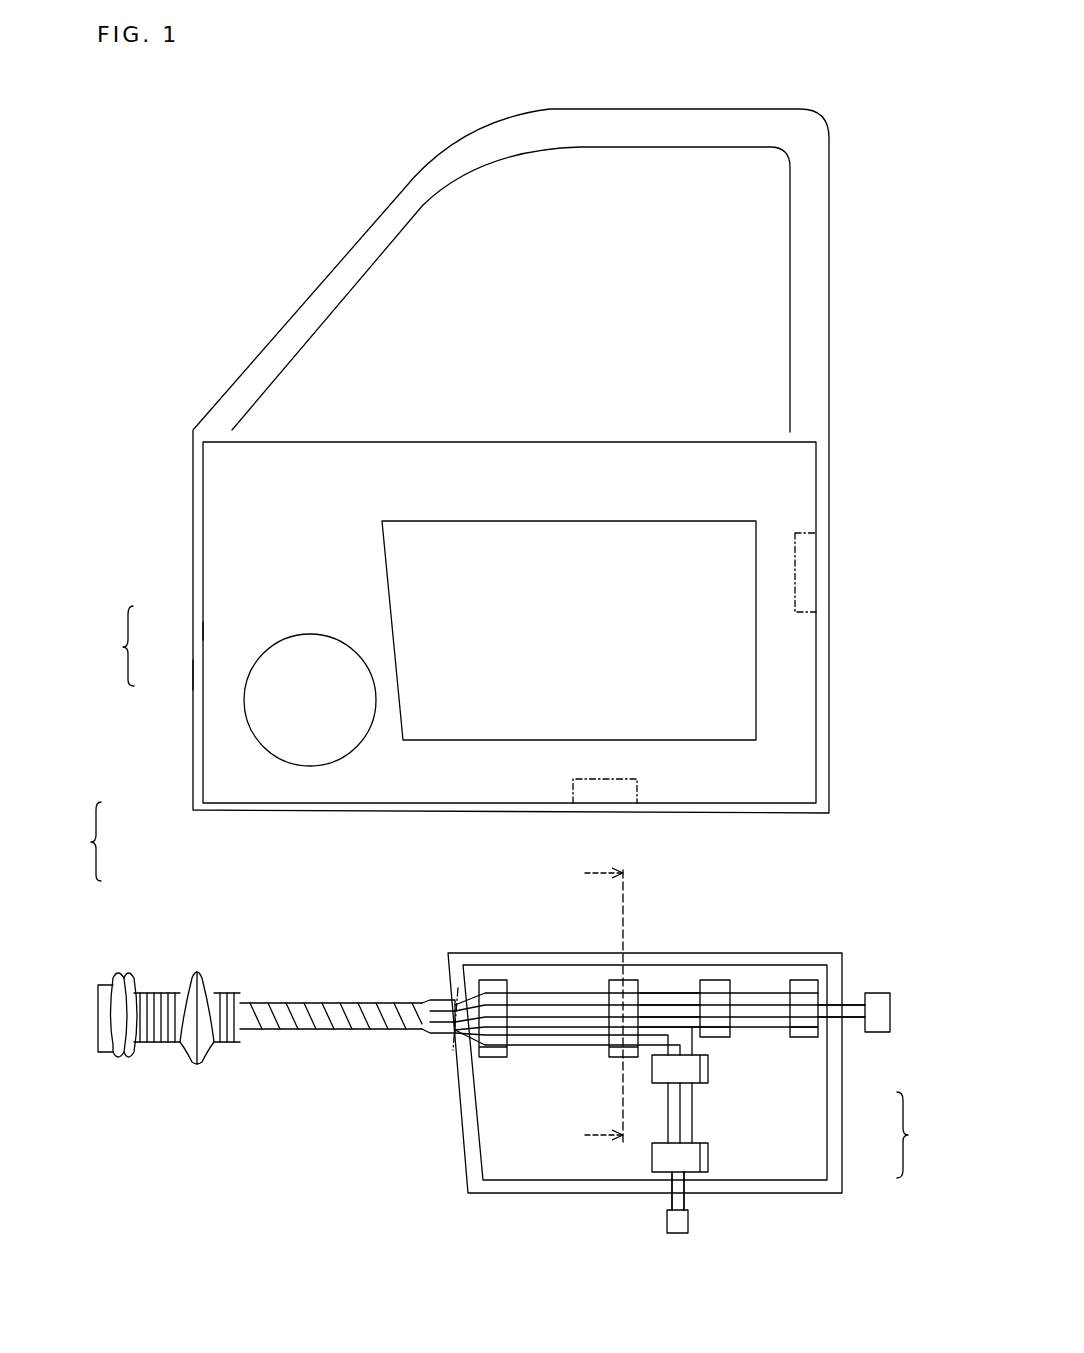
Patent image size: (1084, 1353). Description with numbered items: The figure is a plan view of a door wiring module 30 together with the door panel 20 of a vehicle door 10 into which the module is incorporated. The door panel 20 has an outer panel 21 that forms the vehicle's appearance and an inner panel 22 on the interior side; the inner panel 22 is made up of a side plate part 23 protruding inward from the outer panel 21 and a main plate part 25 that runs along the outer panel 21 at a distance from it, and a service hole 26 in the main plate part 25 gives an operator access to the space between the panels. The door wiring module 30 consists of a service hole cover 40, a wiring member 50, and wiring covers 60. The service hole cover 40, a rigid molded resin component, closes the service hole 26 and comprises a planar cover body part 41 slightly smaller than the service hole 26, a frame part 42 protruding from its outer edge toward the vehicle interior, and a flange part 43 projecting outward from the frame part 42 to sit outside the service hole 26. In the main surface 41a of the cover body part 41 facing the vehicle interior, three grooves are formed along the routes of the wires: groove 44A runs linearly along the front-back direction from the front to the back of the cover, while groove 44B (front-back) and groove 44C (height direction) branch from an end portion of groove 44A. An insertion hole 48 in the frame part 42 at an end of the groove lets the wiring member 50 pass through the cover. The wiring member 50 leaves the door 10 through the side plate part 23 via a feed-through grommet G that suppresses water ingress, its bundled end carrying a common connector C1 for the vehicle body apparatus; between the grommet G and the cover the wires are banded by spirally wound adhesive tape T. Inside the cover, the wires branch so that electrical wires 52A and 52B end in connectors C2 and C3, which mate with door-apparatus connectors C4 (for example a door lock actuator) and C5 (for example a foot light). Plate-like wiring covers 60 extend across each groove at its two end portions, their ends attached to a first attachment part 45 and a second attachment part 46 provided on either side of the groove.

The door 10 is at (84, 841).
The door panel 20 is at (489, 476).
The outer panel 21 is at (192, 554).
The inner panel 22 is at (117, 646).
The side plate part 23 is at (203, 673).
The main plate part 25 is at (225, 629).
The service hole 26 is at (745, 652).
The door wiring module 30 is at (165, 910).
The service hole cover 40 is at (692, 1103).
The cover body part 41 is at (810, 1112).
The main surface 41a is at (540, 1168).
The frame part 42 is at (825, 1128).
The flange part 43 is at (835, 1163).
The groove 44A is at (555, 990).
The groove 44B is at (765, 998).
The groove 44C is at (675, 1108).
The first attachment part 45 is at (498, 1057).
The second attachment part 46 is at (633, 985).
The insertion hole 48 is at (452, 1048).
The wiring member 50 is at (425, 995).
The electrical wire 52A is at (852, 1000).
The electrical wire 52B is at (686, 1204).
The wiring cover 60 is at (494, 984).
The common connector C1 is at (103, 1052).
The connector C2 is at (878, 993).
The connector C3 is at (677, 1234).
The connector C4 is at (803, 532).
The connector C5 is at (637, 797).
The grommet G is at (192, 1070).
The adhesive tape T is at (328, 1030).